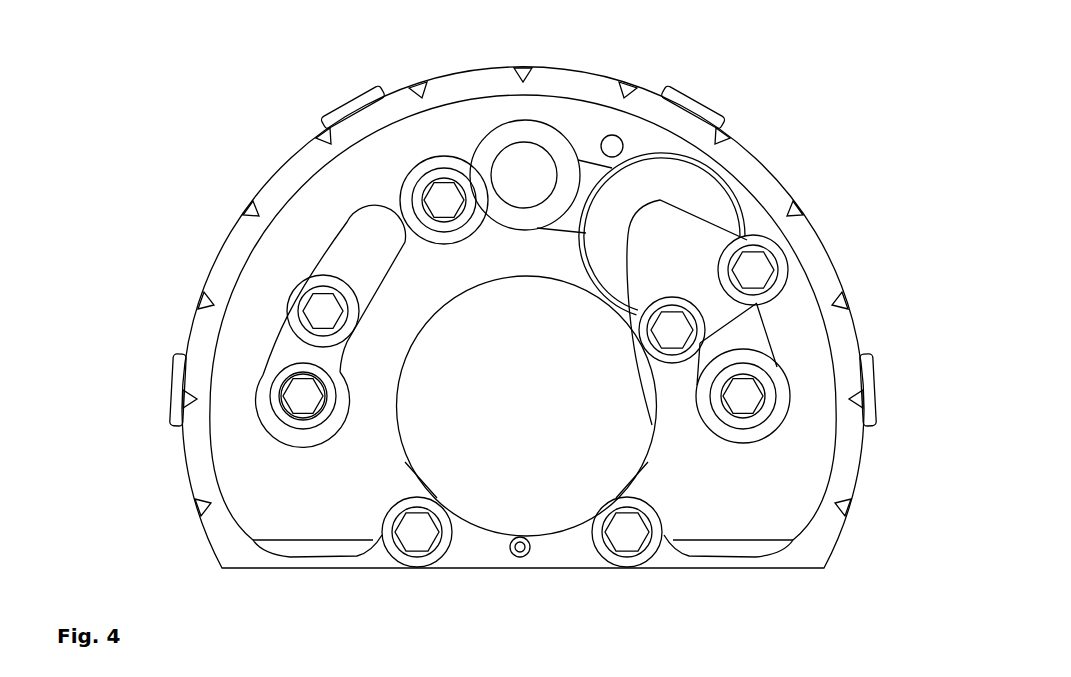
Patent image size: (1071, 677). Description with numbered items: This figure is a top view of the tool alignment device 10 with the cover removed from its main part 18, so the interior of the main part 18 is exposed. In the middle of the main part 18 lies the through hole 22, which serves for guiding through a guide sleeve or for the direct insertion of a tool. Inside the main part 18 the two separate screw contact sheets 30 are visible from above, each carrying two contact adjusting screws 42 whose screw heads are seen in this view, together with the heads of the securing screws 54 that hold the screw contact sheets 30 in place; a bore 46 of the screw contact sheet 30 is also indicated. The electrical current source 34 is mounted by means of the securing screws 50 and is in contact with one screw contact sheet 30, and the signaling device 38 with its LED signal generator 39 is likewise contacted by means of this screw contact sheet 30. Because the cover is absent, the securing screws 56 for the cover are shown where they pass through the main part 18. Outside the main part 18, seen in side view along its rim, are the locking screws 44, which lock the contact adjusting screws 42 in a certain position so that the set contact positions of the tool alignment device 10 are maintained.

The tool alignment device 10 is at (530, 323).
The main part 18 is at (280, 180).
The through hole 22 is at (532, 419).
The screw contact sheet 30 is at (293, 340).
The electrical current source 34 is at (687, 197).
The signaling device 38 is at (520, 160).
The LED signal generator 39 is at (524, 175).
The contact adjusting screw 42 is at (447, 192).
The locking screw 44 is at (358, 99).
The bore of the screw contact sheet 46 is at (295, 397).
The securing screw for battery 50 is at (745, 262).
The securing screw of the screw contact sheet 54 is at (300, 285).
The securing screw for the cover 56 is at (417, 533).